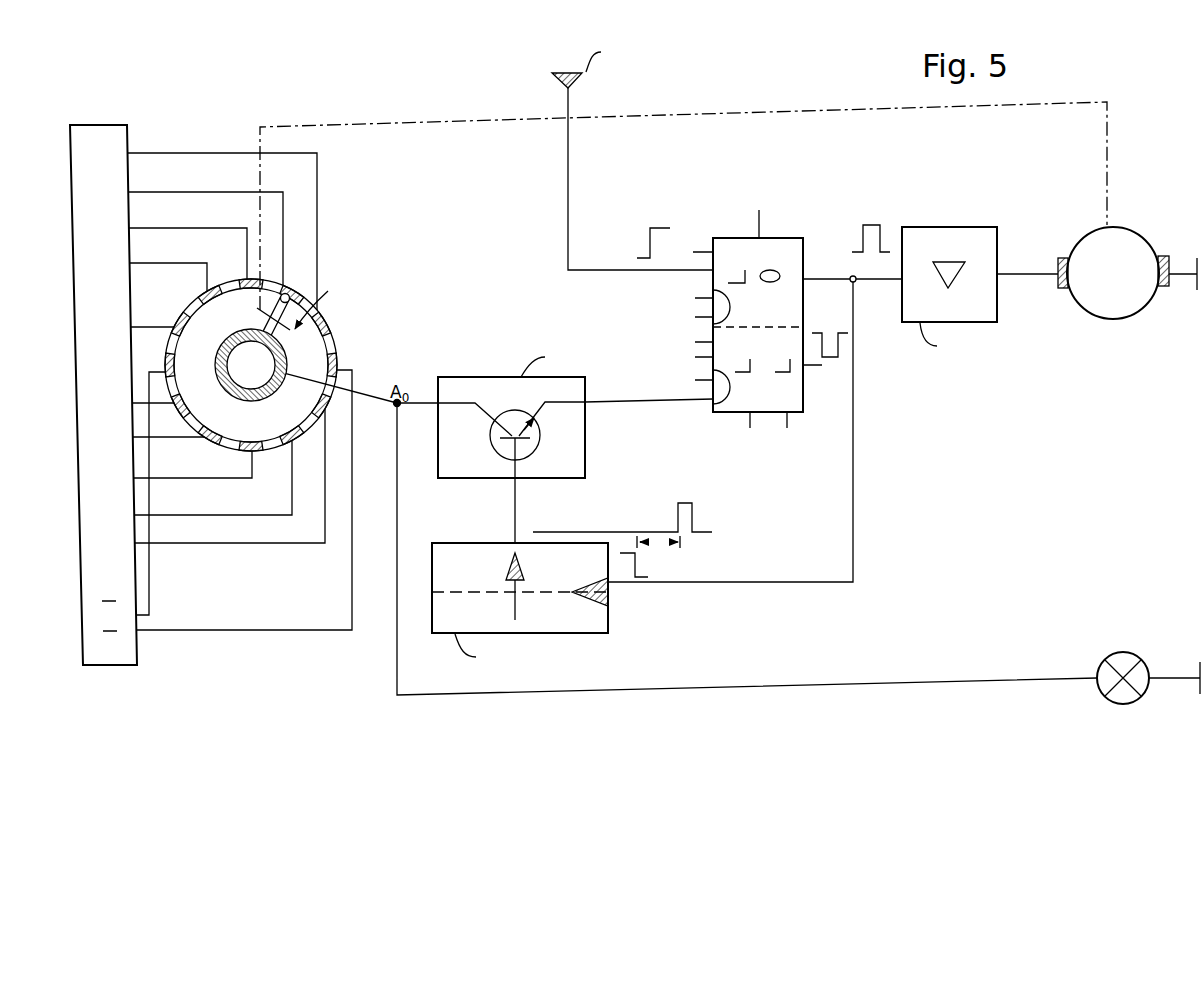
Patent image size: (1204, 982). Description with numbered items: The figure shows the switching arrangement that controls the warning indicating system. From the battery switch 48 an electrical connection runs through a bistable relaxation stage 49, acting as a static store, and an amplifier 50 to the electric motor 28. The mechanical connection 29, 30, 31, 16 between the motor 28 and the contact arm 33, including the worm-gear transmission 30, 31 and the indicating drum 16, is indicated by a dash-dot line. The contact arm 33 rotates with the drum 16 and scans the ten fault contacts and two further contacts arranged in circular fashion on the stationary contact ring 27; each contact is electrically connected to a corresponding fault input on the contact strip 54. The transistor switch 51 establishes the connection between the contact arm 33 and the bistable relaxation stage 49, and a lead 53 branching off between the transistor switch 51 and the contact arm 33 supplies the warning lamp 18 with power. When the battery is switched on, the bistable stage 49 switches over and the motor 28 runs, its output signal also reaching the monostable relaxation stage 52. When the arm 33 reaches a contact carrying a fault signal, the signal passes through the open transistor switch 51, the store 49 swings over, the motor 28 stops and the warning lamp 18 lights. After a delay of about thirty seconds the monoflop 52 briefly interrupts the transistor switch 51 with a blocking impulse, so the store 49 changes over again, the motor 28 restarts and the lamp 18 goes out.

The contact strip 54 is at (115, 136).
The contact ring 27 is at (340, 338).
The contact arm 33 is at (279, 291).
The mechanical connection 29 is at (683, 206).
The transmission 30 is at (683, 206).
The transmission 31 is at (683, 206).
The rotatable drum 16 is at (424, 124).
The battery switch 48 is at (556, 80).
The bistable relaxation stage 49 is at (734, 250).
The amplifier 50 is at (930, 240).
The electric motor 28 is at (1092, 250).
The transistor switch 51 is at (508, 378).
The monostable relaxation stage 52 is at (595, 618).
The lead 53 is at (845, 686).
The warning lamp 18 is at (1123, 660).